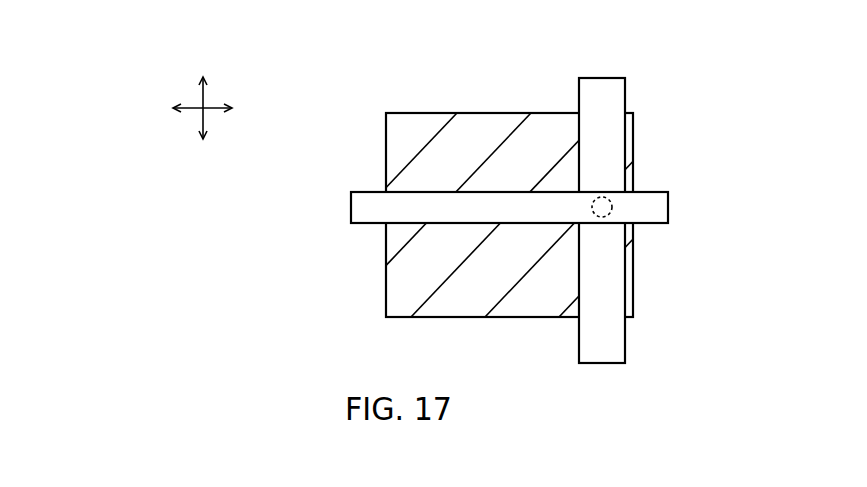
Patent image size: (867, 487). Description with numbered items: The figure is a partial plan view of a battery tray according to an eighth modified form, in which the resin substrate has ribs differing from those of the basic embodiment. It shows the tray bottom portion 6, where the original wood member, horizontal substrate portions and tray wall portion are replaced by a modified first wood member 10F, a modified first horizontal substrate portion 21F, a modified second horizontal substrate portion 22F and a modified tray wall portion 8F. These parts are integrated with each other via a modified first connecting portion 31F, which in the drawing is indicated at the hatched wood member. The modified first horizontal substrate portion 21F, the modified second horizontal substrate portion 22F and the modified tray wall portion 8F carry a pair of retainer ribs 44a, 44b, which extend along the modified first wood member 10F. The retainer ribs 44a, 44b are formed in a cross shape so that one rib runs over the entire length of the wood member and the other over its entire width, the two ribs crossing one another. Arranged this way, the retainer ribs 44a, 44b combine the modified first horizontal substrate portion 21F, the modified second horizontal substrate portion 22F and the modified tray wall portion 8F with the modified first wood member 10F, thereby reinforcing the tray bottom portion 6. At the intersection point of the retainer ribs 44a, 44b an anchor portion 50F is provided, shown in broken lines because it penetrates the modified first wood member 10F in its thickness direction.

The tray bottom portion 6 is at (415, 194).
The modified first wood member 10F is at (478, 150).
The retainer rib 44a is at (370, 207).
The retainer rib 44b is at (600, 98).
The anchor portion 50F is at (598, 217).
The modified first connecting portion 31F is at (388, 274).
The modified tray wall portion 8F is at (340, 258).
The modified first horizontal substrate portion 21F is at (723, 217).
The modified second horizontal substrate portion 22F is at (525, 367).